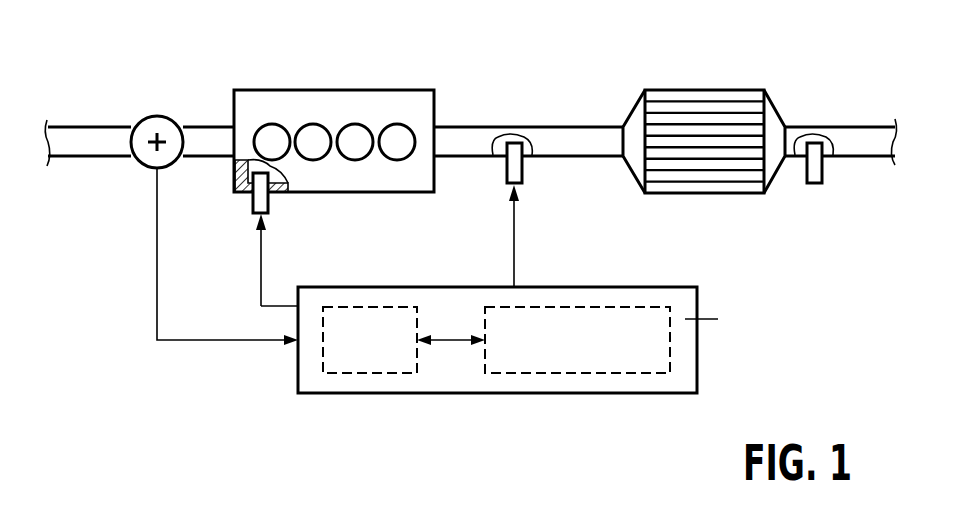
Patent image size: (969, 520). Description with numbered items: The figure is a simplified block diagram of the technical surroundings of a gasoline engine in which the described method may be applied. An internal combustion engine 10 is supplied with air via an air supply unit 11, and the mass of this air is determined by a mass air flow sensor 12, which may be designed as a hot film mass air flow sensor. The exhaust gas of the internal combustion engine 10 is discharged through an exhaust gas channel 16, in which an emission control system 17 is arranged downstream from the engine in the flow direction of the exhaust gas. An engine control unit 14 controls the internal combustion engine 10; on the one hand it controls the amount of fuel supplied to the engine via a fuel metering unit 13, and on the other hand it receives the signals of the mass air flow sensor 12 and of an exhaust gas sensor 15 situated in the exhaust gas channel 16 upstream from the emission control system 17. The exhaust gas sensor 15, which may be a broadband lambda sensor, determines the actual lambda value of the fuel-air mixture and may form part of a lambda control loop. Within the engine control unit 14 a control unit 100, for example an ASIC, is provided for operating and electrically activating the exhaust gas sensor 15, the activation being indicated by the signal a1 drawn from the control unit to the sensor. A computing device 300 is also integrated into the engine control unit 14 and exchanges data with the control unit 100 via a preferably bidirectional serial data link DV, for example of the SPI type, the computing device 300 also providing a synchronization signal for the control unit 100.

The internal combustion engine 10 is at (332, 110).
The air supply unit 11 is at (75, 127).
The mass air flow sensor 12 is at (157, 116).
The fuel metering unit 13 is at (270, 200).
The engine control unit 14 is at (464, 385).
The exhaust gas sensor 15 is at (505, 176).
The exhaust gas channel 16 is at (585, 135).
The emission control system 17 is at (704, 90).
The control unit 100 is at (580, 360).
The computing device 300 is at (362, 360).
The data link DV is at (450, 338).
The actuating signal a1 is at (515, 245).